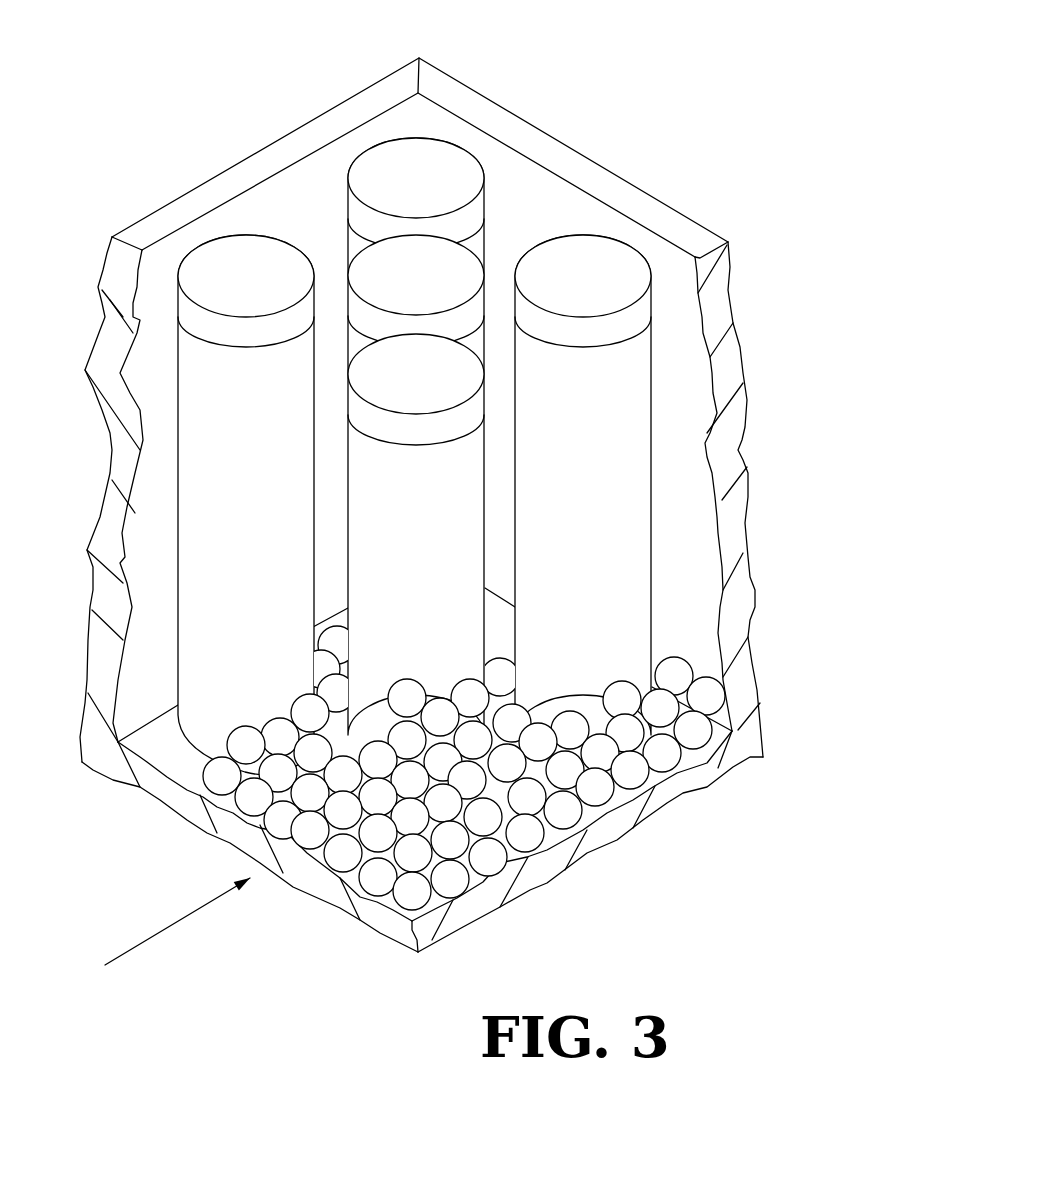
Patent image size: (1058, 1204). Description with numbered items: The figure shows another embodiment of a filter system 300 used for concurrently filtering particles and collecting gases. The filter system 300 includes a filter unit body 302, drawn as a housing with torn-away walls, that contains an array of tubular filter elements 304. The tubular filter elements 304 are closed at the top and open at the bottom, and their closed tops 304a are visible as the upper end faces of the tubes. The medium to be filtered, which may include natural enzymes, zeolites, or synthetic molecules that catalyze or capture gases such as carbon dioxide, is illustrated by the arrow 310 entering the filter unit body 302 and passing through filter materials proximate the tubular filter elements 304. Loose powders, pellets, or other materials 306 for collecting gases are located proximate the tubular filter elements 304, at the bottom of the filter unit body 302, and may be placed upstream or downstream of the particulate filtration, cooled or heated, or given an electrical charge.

The filter system 300 is at (640, 76).
The filter unit body 302 is at (700, 217).
The tubular filter elements 304 is at (406, 424).
The closed tops 304a is at (368, 270).
The gas collecting materials 306 is at (425, 855).
The arrow 310 is at (145, 938).